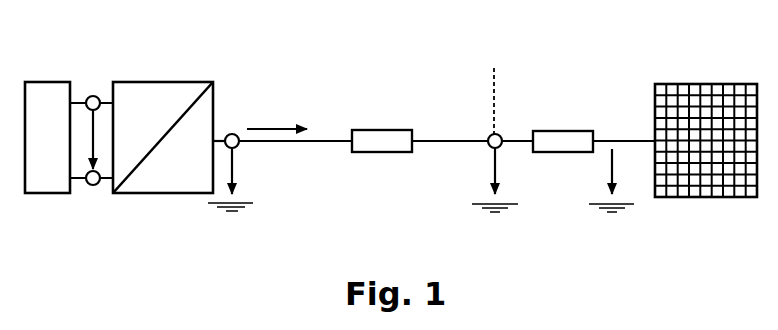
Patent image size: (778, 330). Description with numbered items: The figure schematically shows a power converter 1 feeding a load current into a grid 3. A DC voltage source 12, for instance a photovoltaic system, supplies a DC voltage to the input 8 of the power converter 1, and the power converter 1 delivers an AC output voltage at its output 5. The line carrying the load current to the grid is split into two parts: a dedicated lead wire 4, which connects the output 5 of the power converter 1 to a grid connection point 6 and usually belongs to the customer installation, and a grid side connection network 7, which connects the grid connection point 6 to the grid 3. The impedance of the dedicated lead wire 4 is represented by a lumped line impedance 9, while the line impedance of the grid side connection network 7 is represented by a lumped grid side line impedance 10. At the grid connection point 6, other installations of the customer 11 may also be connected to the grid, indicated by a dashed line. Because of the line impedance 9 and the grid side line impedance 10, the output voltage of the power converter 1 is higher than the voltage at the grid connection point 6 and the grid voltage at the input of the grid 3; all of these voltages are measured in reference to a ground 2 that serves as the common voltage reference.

The power converter 1 is at (160, 82).
The ground 2 is at (225, 213).
The grid 3 is at (685, 83).
The dedicated lead wire 4 is at (427, 137).
The output 5 is at (231, 129).
The grid connection point 6 is at (500, 133).
The grid side connection network 7 is at (600, 132).
The input 8 is at (92, 166).
The line impedance 9 is at (380, 152).
The grid side line impedance 10 is at (565, 152).
The other installations of the customer 11 is at (494, 80).
The DC voltage source 12 is at (52, 82).